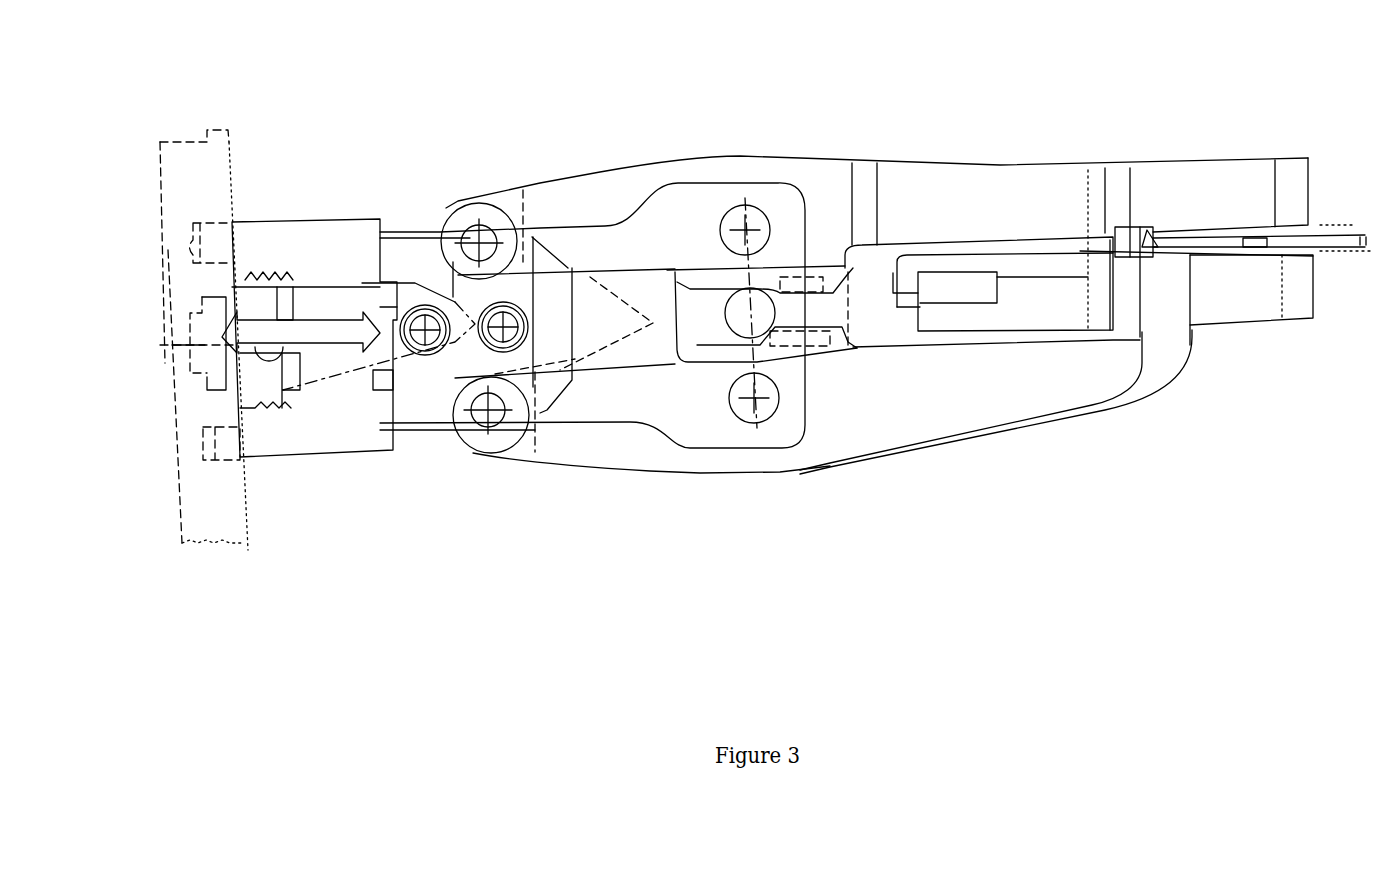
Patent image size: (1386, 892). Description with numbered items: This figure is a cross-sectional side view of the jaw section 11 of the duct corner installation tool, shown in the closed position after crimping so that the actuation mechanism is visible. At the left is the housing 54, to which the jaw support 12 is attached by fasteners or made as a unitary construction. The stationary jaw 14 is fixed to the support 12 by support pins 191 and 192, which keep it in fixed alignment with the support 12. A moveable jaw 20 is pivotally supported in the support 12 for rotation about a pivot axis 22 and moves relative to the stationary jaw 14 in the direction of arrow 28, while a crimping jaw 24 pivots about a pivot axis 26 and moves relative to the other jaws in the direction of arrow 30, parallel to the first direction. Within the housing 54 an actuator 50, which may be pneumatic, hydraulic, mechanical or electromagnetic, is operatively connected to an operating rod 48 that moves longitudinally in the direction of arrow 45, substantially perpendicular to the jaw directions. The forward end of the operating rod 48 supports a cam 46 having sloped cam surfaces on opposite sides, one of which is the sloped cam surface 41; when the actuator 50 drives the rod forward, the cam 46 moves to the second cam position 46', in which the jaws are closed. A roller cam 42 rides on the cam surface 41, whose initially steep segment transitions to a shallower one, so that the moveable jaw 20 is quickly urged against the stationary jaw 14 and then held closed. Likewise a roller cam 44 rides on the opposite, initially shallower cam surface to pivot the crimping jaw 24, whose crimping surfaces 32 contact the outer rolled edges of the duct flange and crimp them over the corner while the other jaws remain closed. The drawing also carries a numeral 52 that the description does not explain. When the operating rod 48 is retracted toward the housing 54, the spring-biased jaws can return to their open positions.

The jaw section 11 is at (727, 122).
The support 12 is at (597, 235).
The stationary jaw 14 is at (1315, 303).
The moveable jaw 20 is at (1300, 183).
The pivot axis 22 is at (743, 220).
The crimping jaw 24 is at (1155, 393).
The pivot axis 26 is at (754, 410).
The arrow 28 is at (1097, 133).
The arrow 30 is at (1108, 455).
The crimping surfaces 32 is at (1147, 232).
The sloped cam surface 41 is at (411, 287).
The roller cam 42 is at (478, 225).
The roller cam 44 is at (485, 440).
The arrow 45 is at (338, 327).
The cam 46 is at (472, 378).
The second cam position 46' is at (593, 411).
The operating rod 48 is at (202, 313).
The actuator 50 is at (172, 357).
The screws 52 is at (493, 347).
The housing 54 is at (215, 163).
The support pin 191 is at (760, 325).
The support pin 192 is at (698, 328).